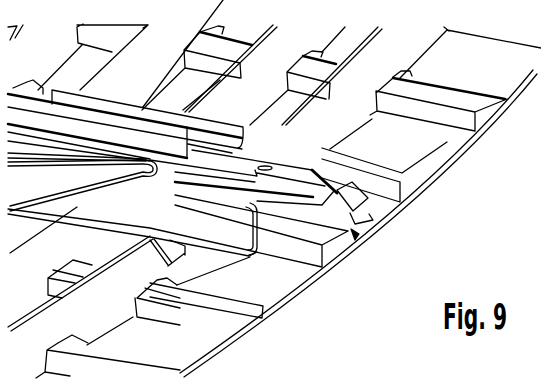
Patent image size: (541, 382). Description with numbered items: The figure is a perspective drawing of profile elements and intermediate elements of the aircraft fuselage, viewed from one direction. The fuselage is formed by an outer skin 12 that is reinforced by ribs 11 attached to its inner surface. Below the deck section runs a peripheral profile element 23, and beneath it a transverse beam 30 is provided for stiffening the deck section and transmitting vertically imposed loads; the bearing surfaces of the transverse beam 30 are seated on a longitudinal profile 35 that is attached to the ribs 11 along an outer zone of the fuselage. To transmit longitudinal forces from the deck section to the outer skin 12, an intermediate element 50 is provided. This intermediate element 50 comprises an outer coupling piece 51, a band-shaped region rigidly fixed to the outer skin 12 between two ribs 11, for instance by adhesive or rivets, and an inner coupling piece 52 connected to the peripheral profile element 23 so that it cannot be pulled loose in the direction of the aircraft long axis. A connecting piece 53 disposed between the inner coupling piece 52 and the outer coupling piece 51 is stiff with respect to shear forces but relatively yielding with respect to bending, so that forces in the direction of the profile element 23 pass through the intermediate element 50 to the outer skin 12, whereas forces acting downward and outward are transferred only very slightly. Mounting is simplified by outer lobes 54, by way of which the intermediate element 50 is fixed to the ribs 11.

The ribs 11 is at (399, 45).
The outer skin 12 is at (446, 143).
The profile elements 23 is at (212, 134).
The transverse beams 30 is at (205, 178).
The longitudinal profiles 35 is at (297, 203).
The intermediate elements 50 is at (357, 240).
The outer coupling piece 51 is at (379, 226).
The inner coupling piece 52 is at (290, 150).
The connecting piece 53 is at (338, 156).
The outer lobes 54 is at (257, 252).